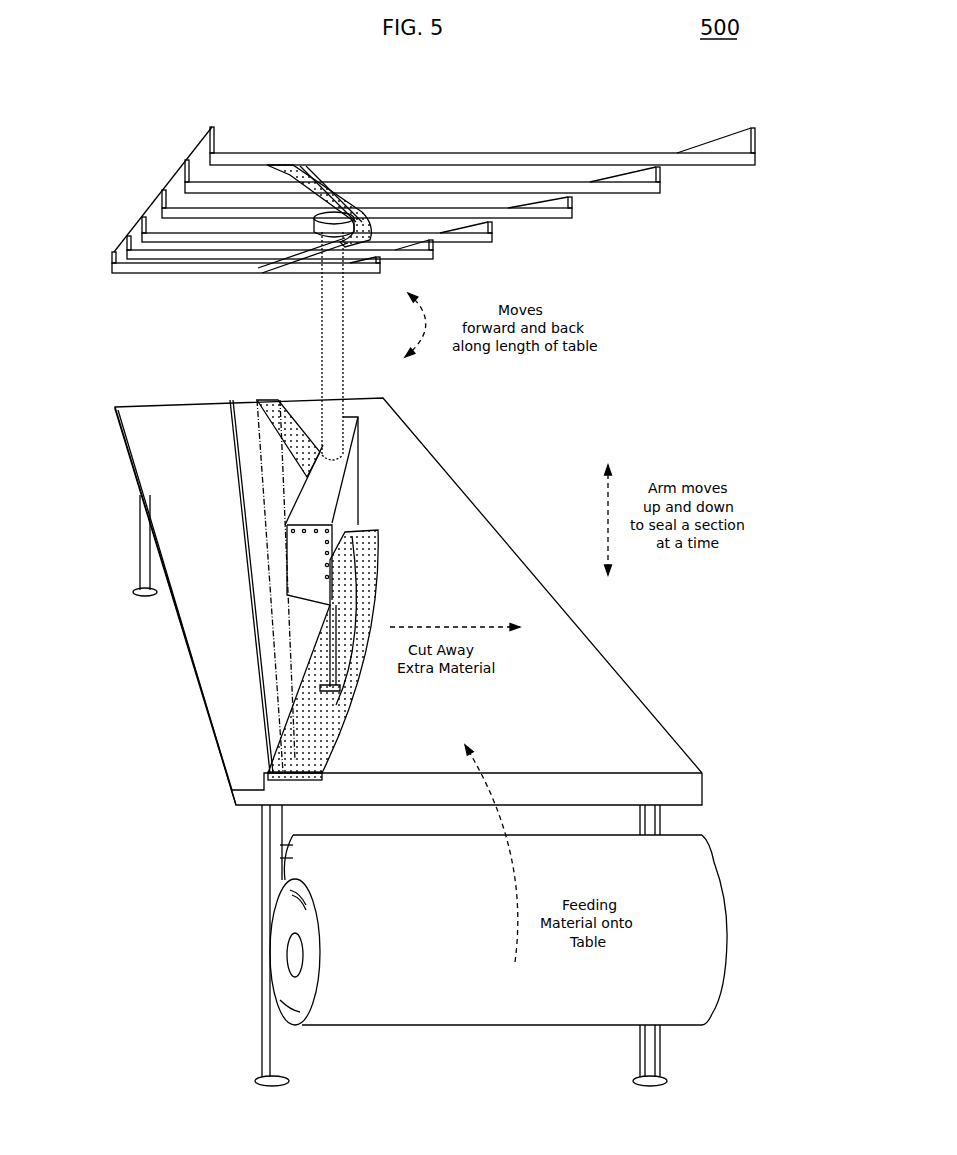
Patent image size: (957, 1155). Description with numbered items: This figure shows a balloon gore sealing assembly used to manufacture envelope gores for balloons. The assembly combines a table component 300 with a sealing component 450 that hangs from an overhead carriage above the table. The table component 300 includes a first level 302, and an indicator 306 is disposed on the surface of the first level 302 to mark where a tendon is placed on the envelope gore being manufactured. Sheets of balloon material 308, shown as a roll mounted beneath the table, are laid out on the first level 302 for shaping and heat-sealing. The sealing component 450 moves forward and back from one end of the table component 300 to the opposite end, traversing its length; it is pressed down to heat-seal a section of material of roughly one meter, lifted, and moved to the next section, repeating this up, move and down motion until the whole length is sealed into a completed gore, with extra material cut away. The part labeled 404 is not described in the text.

The table component 300 is at (640, 685).
The first level 302 is at (300, 398).
The indicator 306 is at (272, 568).
The balloon material 308 is at (470, 952).
The table top 404 is at (152, 407).
The sealing component 450 is at (370, 435).